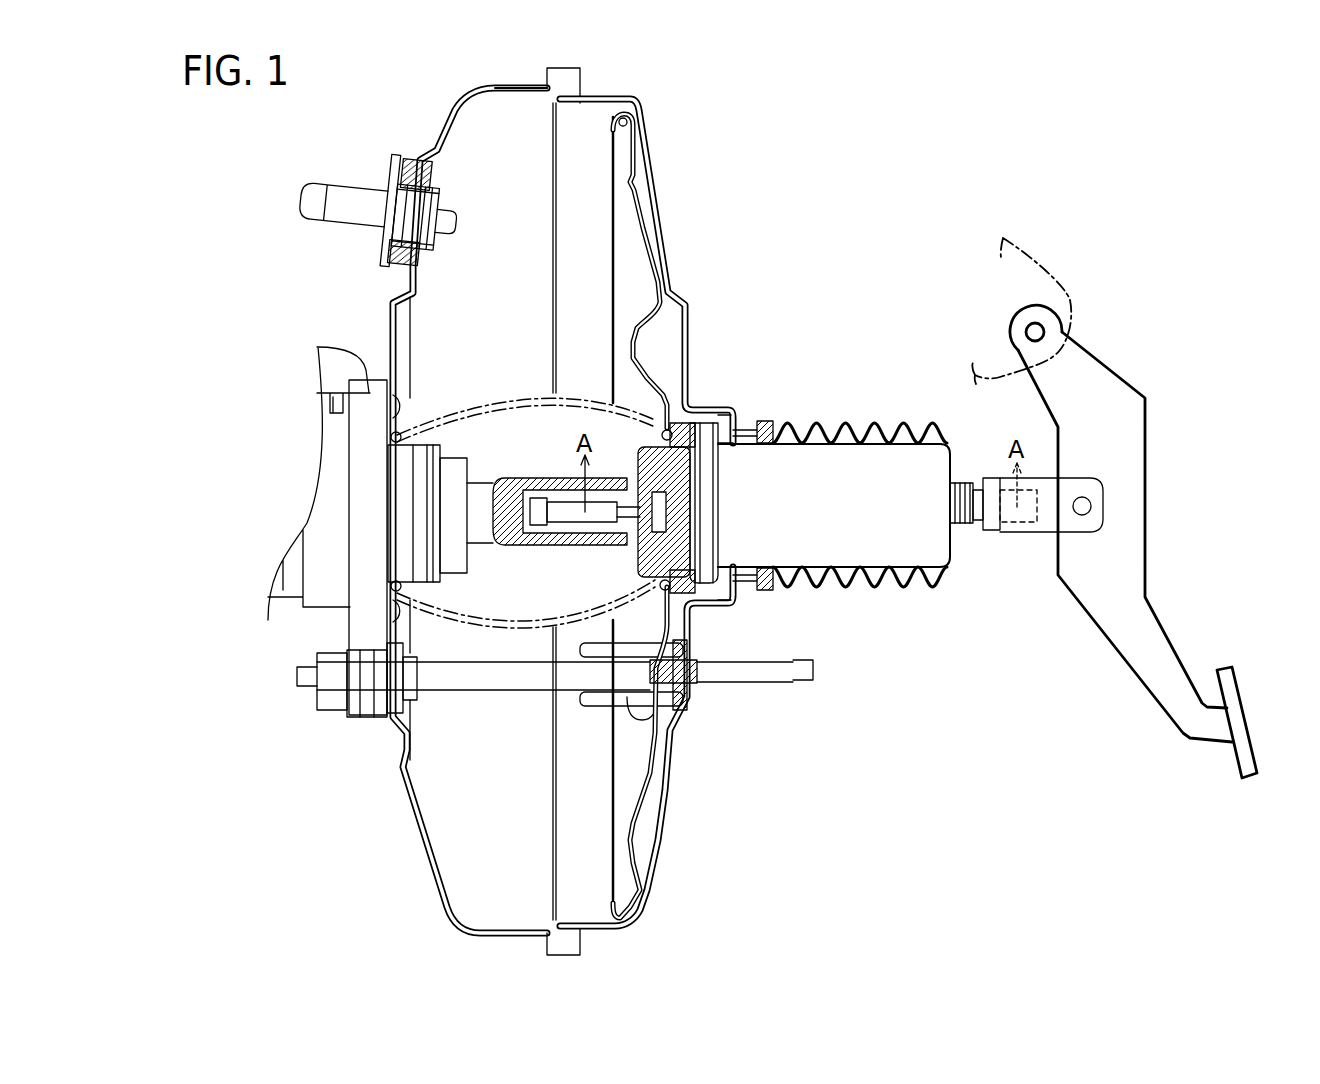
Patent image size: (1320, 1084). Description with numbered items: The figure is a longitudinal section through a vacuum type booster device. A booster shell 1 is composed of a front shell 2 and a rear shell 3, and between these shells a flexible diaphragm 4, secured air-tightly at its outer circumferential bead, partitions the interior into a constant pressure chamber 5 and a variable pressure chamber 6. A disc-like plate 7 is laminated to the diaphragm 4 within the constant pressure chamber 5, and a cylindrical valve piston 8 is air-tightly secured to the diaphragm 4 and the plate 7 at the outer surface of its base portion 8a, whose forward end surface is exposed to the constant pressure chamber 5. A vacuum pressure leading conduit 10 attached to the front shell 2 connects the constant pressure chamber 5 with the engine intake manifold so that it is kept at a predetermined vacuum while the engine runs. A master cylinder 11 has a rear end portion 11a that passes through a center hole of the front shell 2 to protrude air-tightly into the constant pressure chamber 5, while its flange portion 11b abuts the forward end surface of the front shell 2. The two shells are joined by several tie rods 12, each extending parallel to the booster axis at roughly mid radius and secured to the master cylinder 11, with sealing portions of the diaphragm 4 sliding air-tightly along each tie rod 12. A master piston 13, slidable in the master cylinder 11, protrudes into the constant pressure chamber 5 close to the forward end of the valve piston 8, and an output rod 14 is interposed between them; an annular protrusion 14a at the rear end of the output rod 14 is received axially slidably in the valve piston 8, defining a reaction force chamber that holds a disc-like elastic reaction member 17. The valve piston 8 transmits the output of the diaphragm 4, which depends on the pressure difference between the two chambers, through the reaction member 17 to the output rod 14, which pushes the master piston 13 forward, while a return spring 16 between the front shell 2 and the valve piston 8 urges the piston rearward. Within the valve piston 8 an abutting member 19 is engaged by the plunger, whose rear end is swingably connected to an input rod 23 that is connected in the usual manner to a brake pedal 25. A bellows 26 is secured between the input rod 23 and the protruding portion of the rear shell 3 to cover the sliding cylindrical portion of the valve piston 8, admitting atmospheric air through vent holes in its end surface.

The booster shell 1 is at (684, 225).
The front shell 2 is at (440, 135).
The rear shell 3 is at (637, 120).
The diaphragm 4 is at (640, 148).
The constant pressure chamber 5 is at (507, 150).
The variable pressure chamber 6 is at (660, 310).
The plate 7 is at (617, 127).
The valve piston 8 is at (833, 457).
The base portion 8a is at (700, 413).
The vacuum pressure leading conduit 10 is at (345, 207).
The master cylinder 11 is at (337, 639).
The rear end portion 11a is at (433, 486).
The flange portion 11b is at (358, 587).
The tie rod 12 is at (473, 685).
The master piston 13 is at (477, 537).
The output rod 14 is at (577, 497).
The annular protrusion 14a is at (562, 628).
The return spring 16 is at (660, 393).
The reaction member 17 is at (628, 548).
The abutting member 19 is at (690, 516).
The input rod 23 is at (958, 520).
The brake pedal 25 is at (1113, 632).
The bellows 26 is at (920, 420).